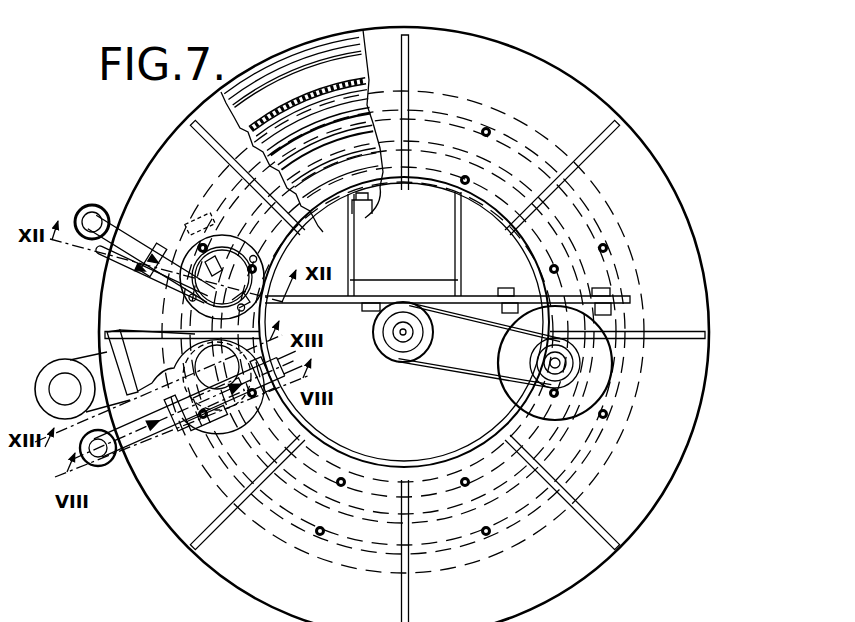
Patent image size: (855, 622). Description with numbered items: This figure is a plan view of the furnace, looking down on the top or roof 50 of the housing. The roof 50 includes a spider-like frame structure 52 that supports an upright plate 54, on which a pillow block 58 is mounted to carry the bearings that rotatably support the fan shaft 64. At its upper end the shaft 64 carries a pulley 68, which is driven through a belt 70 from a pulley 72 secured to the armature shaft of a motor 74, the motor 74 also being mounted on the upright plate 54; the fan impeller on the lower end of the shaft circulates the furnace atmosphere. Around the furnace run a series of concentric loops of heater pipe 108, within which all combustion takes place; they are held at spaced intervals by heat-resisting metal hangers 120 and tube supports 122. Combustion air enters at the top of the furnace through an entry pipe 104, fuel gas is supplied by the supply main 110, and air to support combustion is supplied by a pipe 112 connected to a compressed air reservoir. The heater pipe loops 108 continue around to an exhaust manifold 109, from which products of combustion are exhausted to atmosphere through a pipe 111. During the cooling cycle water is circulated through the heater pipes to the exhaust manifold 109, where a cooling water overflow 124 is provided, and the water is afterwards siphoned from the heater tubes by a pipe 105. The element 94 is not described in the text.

The top or roof 50 is at (663, 151).
The spider-like frame structure 52 is at (614, 117).
The upright plate 54 is at (632, 299).
The pillow block 58 is at (377, 309).
The shaft 64 is at (400, 342).
The pulley 68 is at (398, 335).
The belt 70 is at (447, 374).
The pulley 72 is at (574, 381).
The motor 74 is at (600, 378).
The annular wall 94 is at (660, 207).
The entry pipe 104 is at (230, 416).
The pipe 105 is at (117, 263).
The heater pipes 108 is at (335, 138).
The exhaust manifold 109 is at (192, 256).
The supply main 110 is at (133, 437).
The pipe 111 is at (216, 238).
The pipe 112 is at (100, 360).
The metal hangers 120 is at (468, 180).
The tube supports 122 is at (368, 212).
The cooling water overflow 124 is at (106, 205).